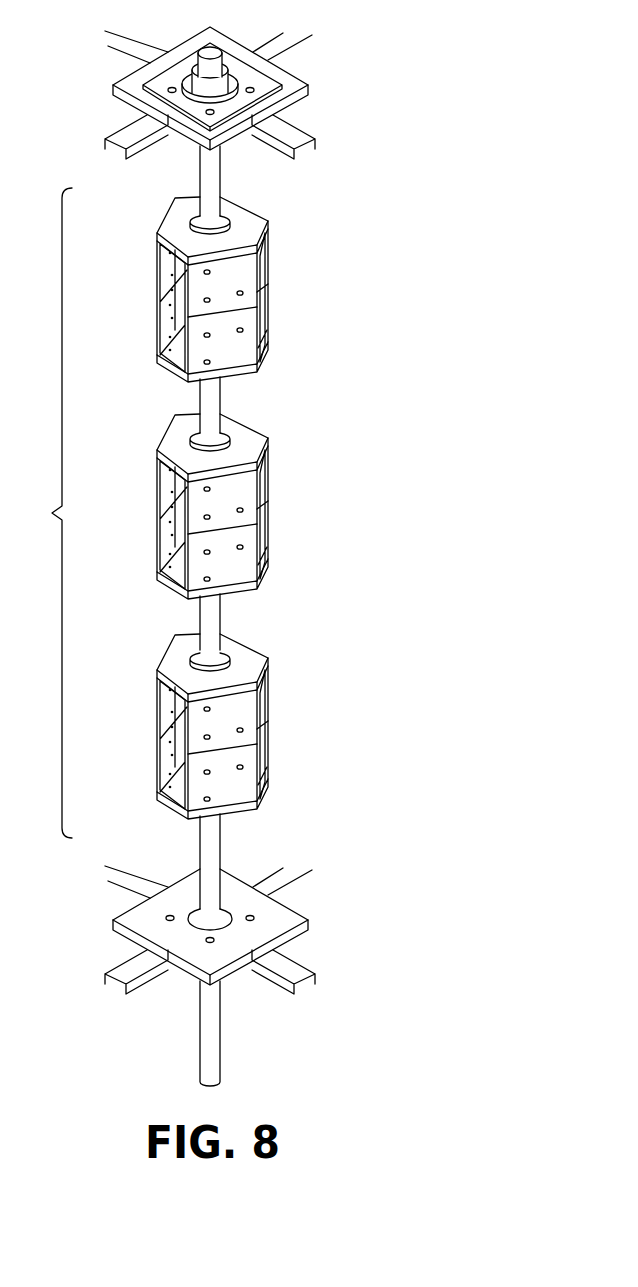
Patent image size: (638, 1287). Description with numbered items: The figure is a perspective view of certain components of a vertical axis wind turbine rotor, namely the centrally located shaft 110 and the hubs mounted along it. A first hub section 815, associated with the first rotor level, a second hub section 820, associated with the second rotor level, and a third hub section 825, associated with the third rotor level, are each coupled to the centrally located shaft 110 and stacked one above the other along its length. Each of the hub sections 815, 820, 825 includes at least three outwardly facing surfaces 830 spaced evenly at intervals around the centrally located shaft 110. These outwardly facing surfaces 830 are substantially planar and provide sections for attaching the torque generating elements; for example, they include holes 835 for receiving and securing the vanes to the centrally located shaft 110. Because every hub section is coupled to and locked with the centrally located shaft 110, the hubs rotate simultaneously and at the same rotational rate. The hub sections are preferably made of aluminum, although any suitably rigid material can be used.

The centrally located shaft 110 is at (225, 172).
The first hub section 815 is at (212, 300).
The second hub section 820 is at (167, 433).
The third hub section 825 is at (167, 652).
The outwardly facing surface 830 is at (268, 248).
The hole 835 is at (210, 365).